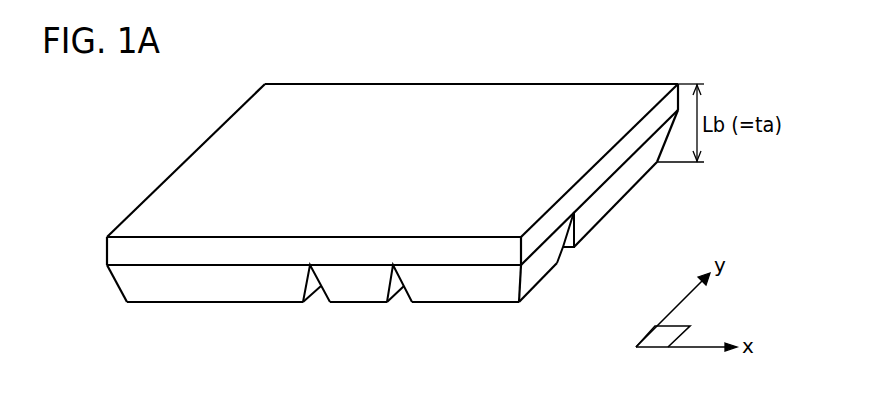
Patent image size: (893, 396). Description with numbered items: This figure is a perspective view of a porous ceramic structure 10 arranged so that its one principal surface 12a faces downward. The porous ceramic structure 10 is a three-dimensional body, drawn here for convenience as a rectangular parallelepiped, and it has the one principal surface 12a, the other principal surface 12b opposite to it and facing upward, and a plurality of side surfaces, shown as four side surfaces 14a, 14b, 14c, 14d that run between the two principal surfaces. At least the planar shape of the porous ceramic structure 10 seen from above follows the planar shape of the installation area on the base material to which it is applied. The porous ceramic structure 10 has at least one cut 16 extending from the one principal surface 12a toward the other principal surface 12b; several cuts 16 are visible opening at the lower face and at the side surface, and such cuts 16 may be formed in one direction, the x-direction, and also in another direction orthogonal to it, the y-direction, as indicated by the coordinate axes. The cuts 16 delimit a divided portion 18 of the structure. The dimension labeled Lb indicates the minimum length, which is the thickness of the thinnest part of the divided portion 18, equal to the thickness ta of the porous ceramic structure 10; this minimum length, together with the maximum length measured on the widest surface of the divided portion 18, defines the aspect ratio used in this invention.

The porous ceramic structure 10 is at (89, 116).
The one principal surface 12a is at (466, 306).
The other principal surface 12b is at (398, 115).
The side surface 14a is at (235, 282).
The side surface 14b is at (491, 81).
The side surface 14c is at (217, 127).
The side surface 14d is at (618, 182).
The cut 16 is at (316, 294).
The divided portion 18 is at (172, 304).